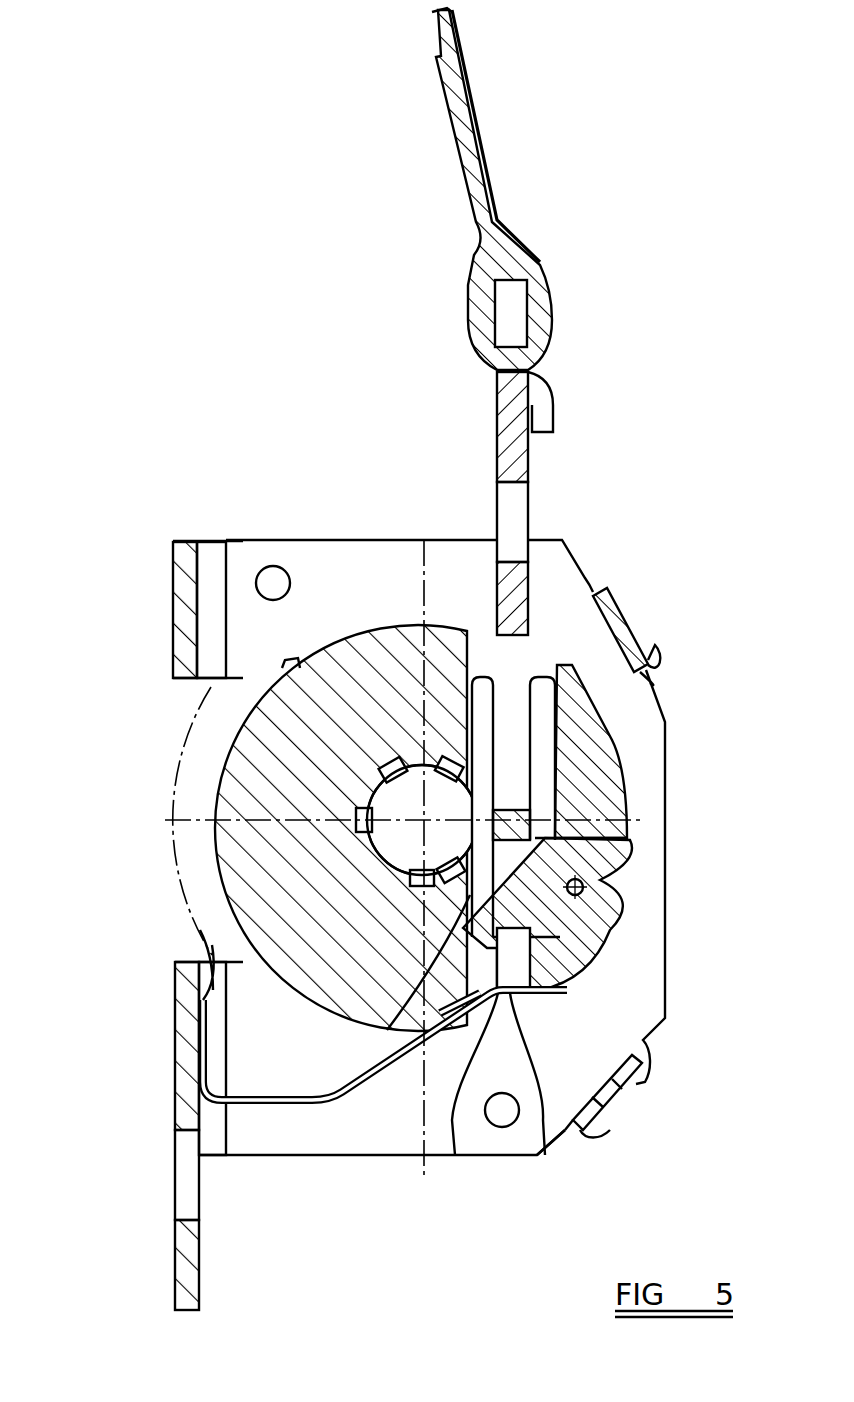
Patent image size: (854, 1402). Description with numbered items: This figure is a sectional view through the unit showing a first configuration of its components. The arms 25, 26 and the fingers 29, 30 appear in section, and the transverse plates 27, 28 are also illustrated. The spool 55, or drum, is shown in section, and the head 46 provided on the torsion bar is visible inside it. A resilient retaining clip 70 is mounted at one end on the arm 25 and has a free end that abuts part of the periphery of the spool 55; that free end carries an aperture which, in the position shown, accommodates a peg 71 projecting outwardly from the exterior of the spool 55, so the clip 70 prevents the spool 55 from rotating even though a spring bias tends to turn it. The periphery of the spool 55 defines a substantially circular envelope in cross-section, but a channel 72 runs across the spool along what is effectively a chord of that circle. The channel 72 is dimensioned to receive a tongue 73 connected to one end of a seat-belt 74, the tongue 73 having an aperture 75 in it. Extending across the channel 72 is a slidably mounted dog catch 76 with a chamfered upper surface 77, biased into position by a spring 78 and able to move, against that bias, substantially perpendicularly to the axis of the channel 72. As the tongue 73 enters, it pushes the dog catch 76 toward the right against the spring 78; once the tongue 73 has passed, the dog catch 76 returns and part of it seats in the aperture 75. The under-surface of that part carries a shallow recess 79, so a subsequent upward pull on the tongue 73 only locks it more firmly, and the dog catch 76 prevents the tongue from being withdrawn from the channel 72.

The seat-belt 74 is at (467, 150).
The tongue 73 is at (500, 410).
The aperture 75 is at (512, 522).
The transverse plate 27 is at (340, 553).
The arm 26 is at (180, 602).
The finger 29 is at (640, 618).
The channel 72 is at (516, 830).
The spool 55 is at (622, 766).
The head 46 is at (397, 830).
The dog catch 76 is at (627, 855).
The spring 78 is at (585, 887).
The transverse plate 28 is at (200, 935).
The arm 25 is at (178, 1083).
The finger 30 is at (615, 1098).
The resilient retaining clip 70 is at (300, 1102).
The chamfered upper surface 77 is at (389, 1035).
The peg 71 is at (452, 1118).
The shallow recess 79 is at (547, 1140).